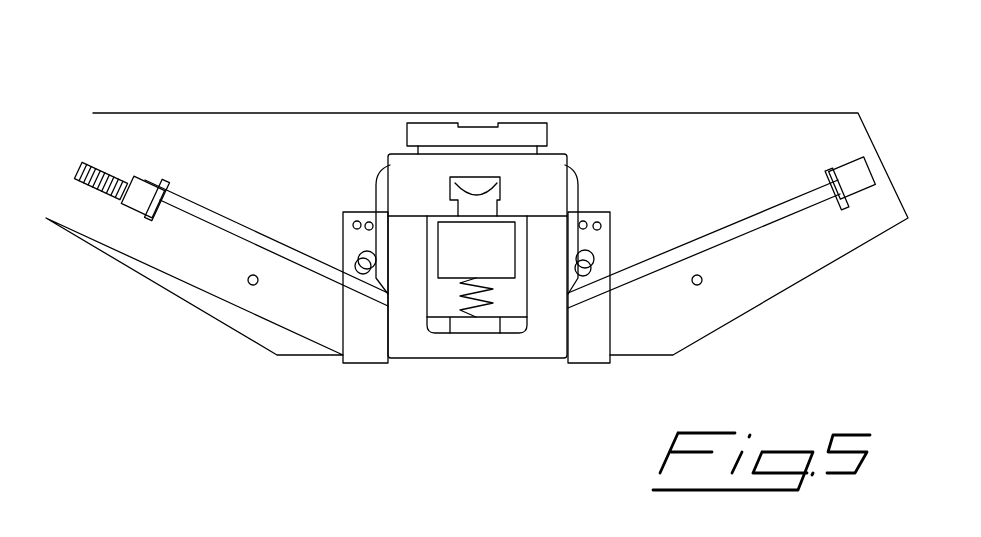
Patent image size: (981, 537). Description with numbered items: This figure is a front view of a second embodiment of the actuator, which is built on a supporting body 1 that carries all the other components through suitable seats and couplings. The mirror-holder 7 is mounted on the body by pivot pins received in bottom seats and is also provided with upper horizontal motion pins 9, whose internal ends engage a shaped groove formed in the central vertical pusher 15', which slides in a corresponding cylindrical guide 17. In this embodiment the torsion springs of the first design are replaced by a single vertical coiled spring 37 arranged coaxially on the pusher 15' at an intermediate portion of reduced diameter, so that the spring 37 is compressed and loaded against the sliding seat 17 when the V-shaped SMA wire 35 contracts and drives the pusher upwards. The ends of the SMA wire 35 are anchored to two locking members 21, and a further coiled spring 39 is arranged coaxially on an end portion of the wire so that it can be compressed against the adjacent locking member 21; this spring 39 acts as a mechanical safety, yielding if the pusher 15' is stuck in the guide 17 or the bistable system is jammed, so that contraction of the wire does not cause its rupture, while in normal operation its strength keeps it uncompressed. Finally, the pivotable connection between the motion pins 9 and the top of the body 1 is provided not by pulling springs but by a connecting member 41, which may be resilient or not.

The supporting body 1 is at (227, 126).
The mirror-holder 7 is at (487, 350).
The motion pin 9 is at (505, 255).
The pusher 15' is at (441, 119).
The cylindrical guide 17 is at (548, 202).
The locking member 21 is at (137, 197).
The SMA wire 35 is at (733, 230).
The coiled spring 37 is at (462, 313).
The coiled spring 39 is at (88, 190).
The connecting member 41 is at (380, 180).